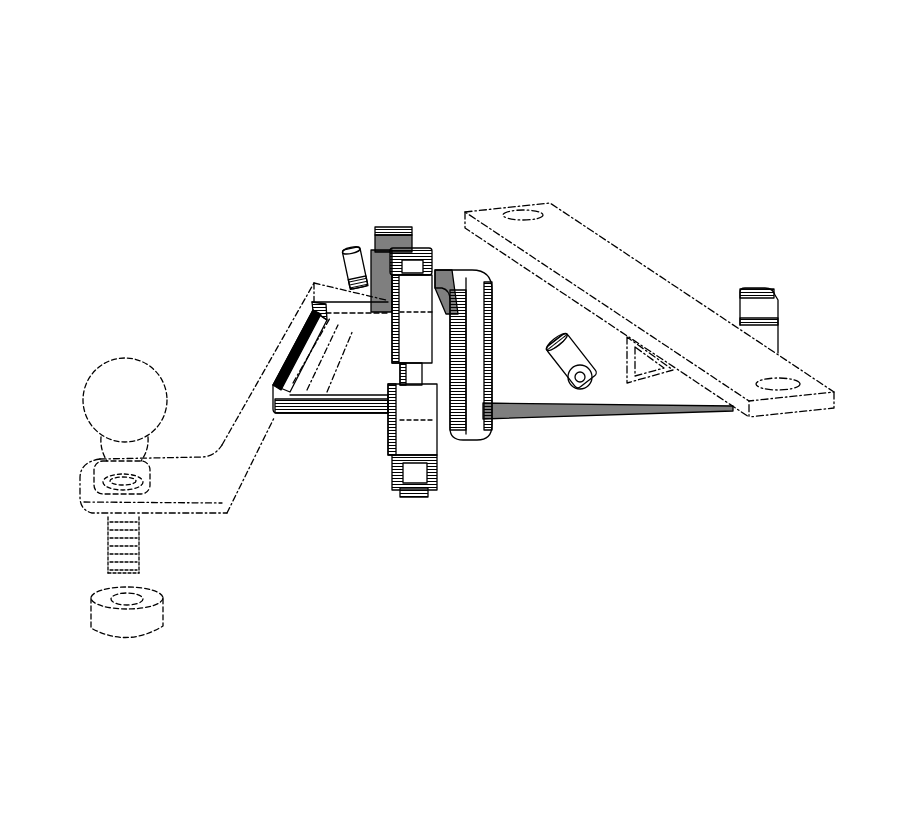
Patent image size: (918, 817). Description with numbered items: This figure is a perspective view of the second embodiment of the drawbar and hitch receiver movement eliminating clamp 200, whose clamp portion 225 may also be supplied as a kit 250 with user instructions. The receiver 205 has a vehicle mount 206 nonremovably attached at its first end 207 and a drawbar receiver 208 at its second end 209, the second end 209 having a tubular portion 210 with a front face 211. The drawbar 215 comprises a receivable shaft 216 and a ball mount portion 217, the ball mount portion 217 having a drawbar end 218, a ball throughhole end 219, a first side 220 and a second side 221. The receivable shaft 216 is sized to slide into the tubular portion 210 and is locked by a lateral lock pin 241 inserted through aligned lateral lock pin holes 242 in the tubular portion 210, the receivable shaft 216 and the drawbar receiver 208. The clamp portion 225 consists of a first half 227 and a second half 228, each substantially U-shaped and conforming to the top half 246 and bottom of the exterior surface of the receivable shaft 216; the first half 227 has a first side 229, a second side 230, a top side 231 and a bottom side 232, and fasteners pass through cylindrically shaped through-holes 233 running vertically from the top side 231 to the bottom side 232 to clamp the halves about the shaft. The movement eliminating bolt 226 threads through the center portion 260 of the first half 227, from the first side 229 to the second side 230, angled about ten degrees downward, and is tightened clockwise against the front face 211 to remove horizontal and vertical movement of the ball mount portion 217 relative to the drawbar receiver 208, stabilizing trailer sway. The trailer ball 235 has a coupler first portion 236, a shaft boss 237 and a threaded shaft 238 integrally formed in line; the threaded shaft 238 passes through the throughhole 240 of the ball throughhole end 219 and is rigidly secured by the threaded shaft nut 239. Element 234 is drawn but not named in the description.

The drawbar and hitch receiver movement eliminating clamp 200 is at (612, 56).
The kit 250 is at (650, 90).
The center portion 260 is at (390, 240).
The clamp portion 225 is at (387, 170).
The clamp top portion 234 is at (441, 268).
The movement eliminating bolt 226 is at (362, 248).
The top side 231 is at (450, 266).
The second side 230 is at (485, 288).
The lateral lock pin holes 242 is at (585, 335).
The top half 246 is at (692, 282).
The receiver 205 is at (673, 242).
The receivable shaft 216 is at (355, 400).
The vehicle mount 206 is at (743, 358).
The drawbar 215 is at (254, 217).
The drawbar end 218 is at (298, 303).
The ball mount portion 217 is at (293, 313).
The cylindrically shaped through-holes 233 is at (340, 305).
The first side 220 is at (253, 395).
The throughhole 240 is at (125, 473).
The trailer ball 235 is at (88, 382).
The coupler first portion 236 is at (85, 408).
The shaft boss 237 is at (92, 477).
The threaded shaft 238 is at (108, 540).
The shaft nut 239 is at (110, 623).
The ball throughhole end 219 is at (168, 518).
The second side 221 is at (263, 467).
The first side 229 is at (390, 343).
The first half 227 is at (412, 305).
The second half 228 is at (412, 440).
The bottom side 232 is at (462, 368).
The drawbar receiver 208 is at (510, 385).
The lateral lock pin 241 is at (587, 385).
The tubular portion 210 is at (645, 404).
The first end 207 is at (717, 410).
The second end 209 is at (493, 400).
The front face 211 is at (447, 433).